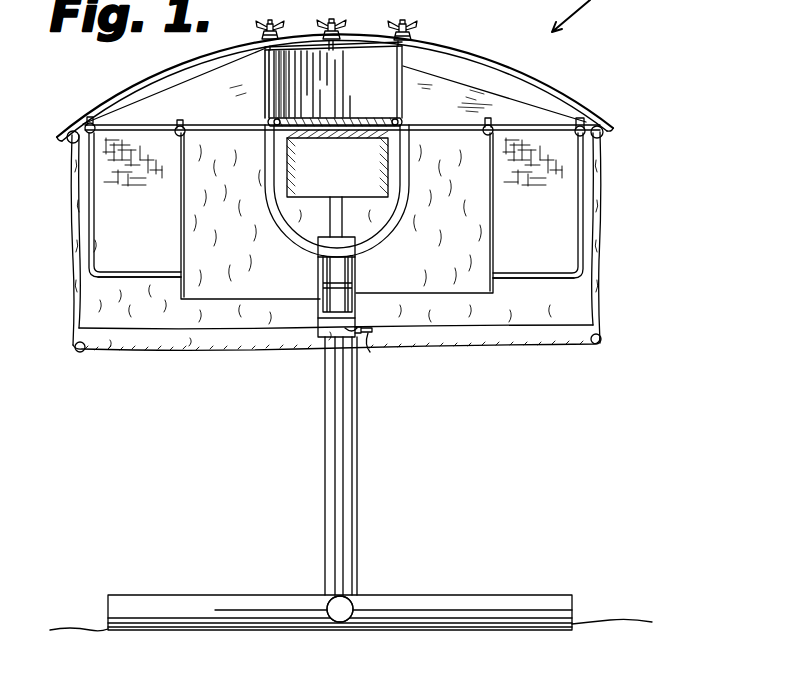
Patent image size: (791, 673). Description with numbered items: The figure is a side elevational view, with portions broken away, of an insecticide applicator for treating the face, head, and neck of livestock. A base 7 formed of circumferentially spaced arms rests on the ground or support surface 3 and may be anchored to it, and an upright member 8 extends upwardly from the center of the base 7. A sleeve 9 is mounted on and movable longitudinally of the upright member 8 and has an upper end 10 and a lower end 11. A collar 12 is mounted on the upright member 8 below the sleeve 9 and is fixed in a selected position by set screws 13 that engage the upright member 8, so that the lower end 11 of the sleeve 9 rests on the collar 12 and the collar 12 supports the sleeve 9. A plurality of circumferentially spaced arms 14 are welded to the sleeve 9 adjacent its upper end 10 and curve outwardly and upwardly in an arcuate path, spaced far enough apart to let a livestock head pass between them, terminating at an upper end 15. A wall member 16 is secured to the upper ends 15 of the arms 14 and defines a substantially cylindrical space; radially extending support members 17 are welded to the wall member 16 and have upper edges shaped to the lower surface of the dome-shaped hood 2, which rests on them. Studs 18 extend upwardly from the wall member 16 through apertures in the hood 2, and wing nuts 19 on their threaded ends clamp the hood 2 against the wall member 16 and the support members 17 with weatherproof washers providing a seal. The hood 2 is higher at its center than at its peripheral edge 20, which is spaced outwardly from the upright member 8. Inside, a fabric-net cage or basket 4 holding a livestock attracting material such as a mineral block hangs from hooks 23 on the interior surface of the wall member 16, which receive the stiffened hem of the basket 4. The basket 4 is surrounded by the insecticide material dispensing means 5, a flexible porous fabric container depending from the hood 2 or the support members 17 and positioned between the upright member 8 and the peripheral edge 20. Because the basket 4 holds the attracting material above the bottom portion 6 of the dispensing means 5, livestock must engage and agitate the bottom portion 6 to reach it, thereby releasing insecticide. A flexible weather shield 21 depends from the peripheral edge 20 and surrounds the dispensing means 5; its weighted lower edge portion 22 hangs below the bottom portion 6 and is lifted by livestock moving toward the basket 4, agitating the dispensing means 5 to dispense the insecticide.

The hood 2 is at (508, 62).
The ground or support surface 3 is at (63, 629).
The cage or basket 4 is at (377, 153).
The insecticide material dispensing means 5 is at (97, 230).
The bottom portion 6 is at (167, 276).
The base 7 is at (247, 595).
The upright member 8 is at (358, 567).
The sleeve 9 is at (318, 315).
The upper end 10 is at (320, 242).
The lower end 11 is at (345, 328).
The collar 12 is at (320, 337).
The set screws 13 is at (368, 337).
The arms 14 is at (410, 205).
The upper end 15 is at (267, 125).
The wall member 16 is at (382, 26).
The support members 17 is at (443, 72).
The studs 18 is at (330, 48).
The wing nuts 19 is at (262, 30).
The peripheral edge 20 is at (608, 132).
The flexible weather shield 21 is at (602, 207).
The lower edge portion 22 is at (548, 348).
The hooks 23 is at (397, 110).